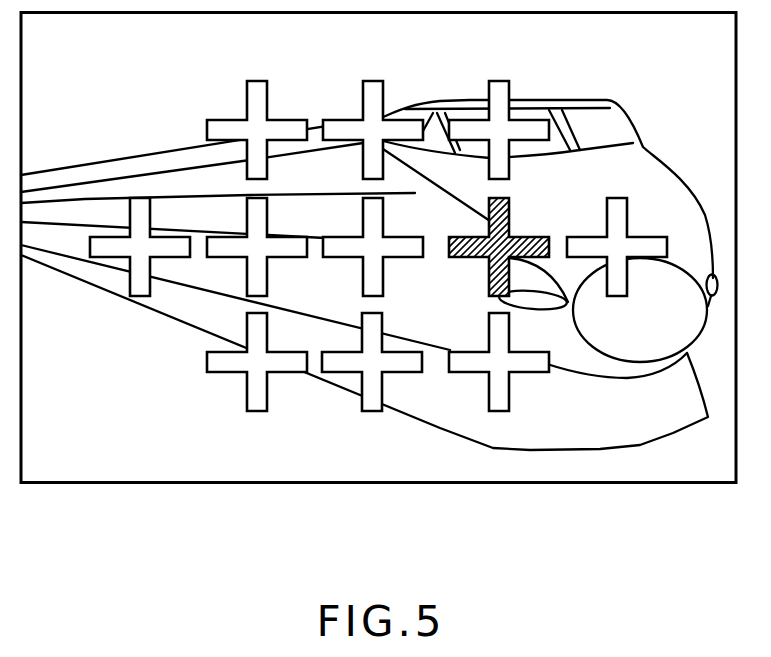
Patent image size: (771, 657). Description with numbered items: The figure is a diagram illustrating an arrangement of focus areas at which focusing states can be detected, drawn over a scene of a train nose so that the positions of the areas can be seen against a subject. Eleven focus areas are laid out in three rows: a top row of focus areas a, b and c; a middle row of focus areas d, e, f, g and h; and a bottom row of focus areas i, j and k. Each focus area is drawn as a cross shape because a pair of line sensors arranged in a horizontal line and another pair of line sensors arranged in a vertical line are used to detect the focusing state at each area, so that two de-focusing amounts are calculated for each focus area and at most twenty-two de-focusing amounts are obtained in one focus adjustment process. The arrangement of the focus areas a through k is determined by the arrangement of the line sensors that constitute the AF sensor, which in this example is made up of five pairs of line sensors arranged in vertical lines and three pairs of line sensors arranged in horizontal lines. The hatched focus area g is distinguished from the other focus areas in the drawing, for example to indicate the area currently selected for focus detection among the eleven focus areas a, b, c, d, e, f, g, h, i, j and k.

The focus area a is at (275, 121).
The focus area b is at (397, 119).
The focus area c is at (517, 120).
The focus area d is at (139, 199).
The focus area e is at (230, 240).
The focus area f is at (397, 240).
The focus area g is at (532, 237).
The focus area h is at (617, 198).
The focus area i is at (255, 411).
The focus area j is at (372, 411).
The focus area k is at (492, 412).